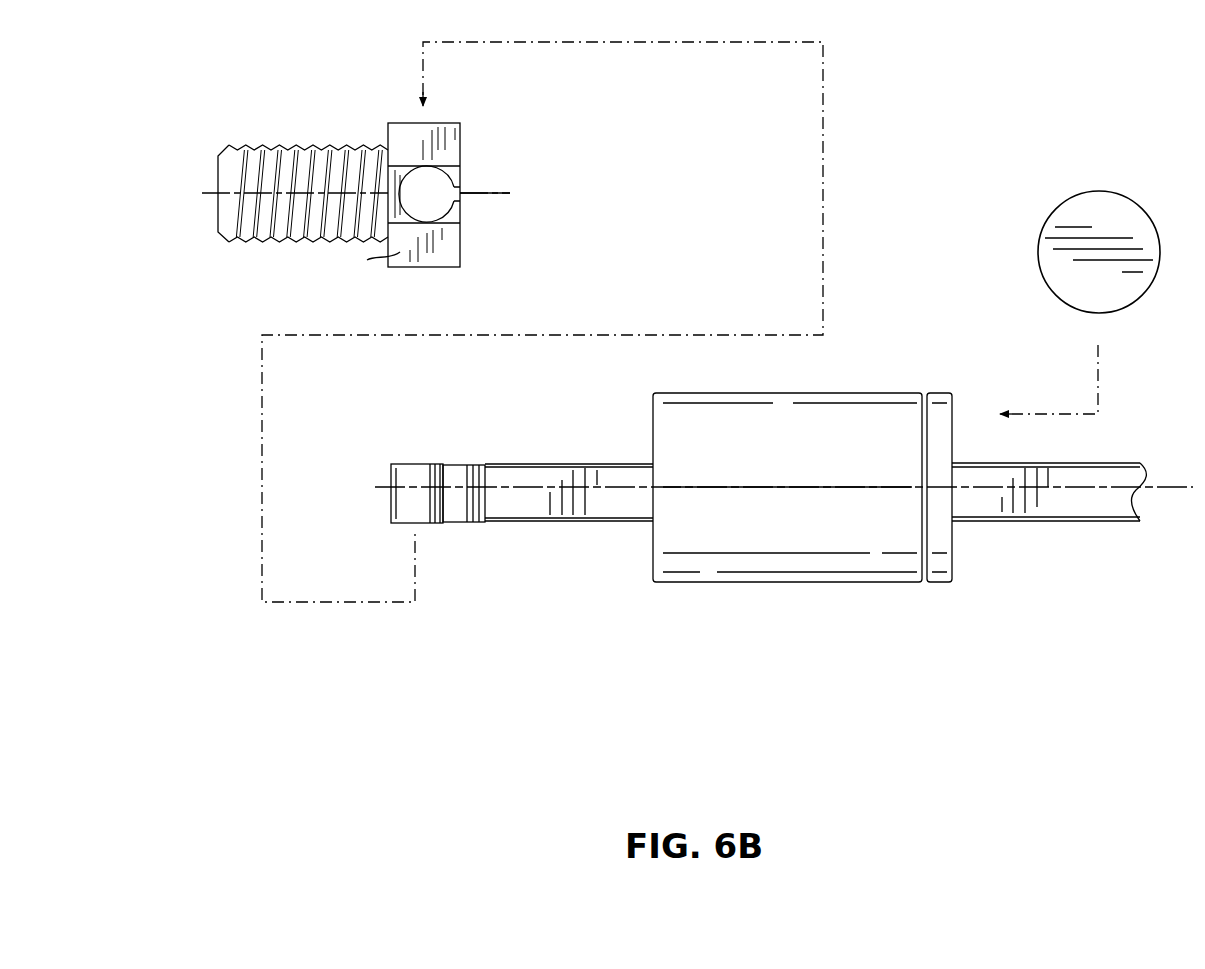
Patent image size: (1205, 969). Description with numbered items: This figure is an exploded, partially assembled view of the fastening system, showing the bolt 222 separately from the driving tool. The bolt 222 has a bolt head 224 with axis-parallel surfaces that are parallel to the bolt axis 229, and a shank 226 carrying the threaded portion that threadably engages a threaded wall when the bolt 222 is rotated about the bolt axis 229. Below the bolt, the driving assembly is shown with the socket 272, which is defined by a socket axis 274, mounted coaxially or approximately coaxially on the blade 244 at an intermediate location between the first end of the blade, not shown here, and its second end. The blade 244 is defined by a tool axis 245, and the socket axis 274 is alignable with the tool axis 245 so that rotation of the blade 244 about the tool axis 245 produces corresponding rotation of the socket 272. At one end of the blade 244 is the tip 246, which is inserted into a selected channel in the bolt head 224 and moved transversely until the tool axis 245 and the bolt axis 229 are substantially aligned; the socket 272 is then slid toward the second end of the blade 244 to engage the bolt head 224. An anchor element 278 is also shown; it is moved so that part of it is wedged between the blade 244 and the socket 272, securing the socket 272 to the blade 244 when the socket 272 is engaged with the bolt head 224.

The bolt 222 is at (375, 339).
The bolt head 224 is at (453, 148).
The shank 226 is at (252, 148).
The bolt axis 229 is at (488, 195).
The blade 244 is at (1068, 507).
The tool axis 245 is at (508, 488).
The tip 246 is at (418, 512).
The socket 272 is at (813, 577).
The socket axis 274 is at (777, 485).
The anchor element 278 is at (1105, 200).